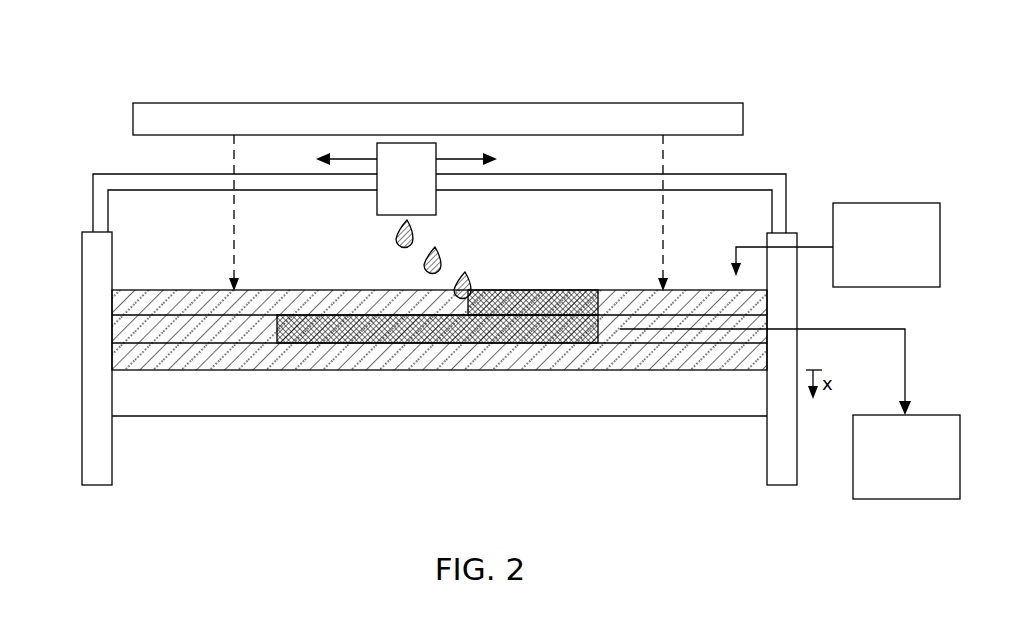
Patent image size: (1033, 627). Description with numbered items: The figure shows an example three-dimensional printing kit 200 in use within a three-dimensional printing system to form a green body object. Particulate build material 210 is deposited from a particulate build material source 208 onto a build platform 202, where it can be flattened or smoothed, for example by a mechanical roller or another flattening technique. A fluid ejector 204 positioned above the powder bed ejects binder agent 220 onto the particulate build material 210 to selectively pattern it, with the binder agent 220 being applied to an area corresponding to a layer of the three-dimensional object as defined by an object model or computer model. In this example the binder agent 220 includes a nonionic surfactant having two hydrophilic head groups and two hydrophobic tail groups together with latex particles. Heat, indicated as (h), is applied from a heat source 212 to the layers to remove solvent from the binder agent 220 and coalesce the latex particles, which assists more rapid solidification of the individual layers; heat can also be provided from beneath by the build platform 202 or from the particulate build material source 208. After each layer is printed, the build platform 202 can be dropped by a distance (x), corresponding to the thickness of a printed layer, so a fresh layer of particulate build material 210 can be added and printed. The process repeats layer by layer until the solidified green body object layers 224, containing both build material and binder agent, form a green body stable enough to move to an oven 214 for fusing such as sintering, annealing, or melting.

The three-dimensional printing kit 200 is at (160, 45).
The build platform 202 is at (605, 402).
The fluid ejector 204 is at (385, 190).
The particulate build material source 208 is at (865, 256).
The particulate build material 210 is at (180, 323).
The heat source 212 is at (416, 130).
The oven 214 is at (886, 468).
The binder agent 220 is at (397, 238).
The green body object layers 224 is at (402, 330).